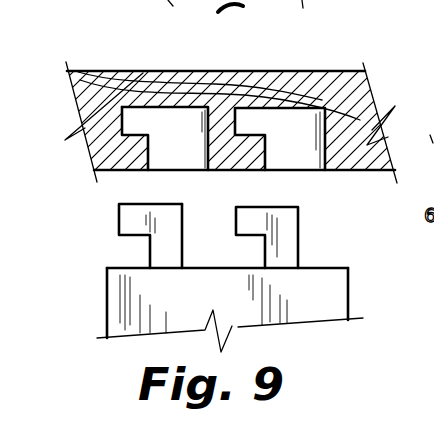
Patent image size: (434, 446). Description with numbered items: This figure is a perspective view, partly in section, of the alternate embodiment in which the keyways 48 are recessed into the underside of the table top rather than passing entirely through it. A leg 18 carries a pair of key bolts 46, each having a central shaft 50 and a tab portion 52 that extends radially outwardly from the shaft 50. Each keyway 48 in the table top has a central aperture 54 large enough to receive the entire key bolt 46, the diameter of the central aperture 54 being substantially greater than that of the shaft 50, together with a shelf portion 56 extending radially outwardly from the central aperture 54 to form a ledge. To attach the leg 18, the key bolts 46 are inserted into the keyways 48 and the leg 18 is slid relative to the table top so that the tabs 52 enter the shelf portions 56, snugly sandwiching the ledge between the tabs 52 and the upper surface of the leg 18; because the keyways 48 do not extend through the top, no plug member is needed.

The leg 18 is at (333, 302).
The key bolt 46 is at (305, 223).
The keyway 48 is at (282, 122).
The central shaft 50 is at (168, 233).
The tab portion 52 is at (135, 220).
The central aperture 54 is at (173, 143).
The shelf portion 56 is at (135, 120).